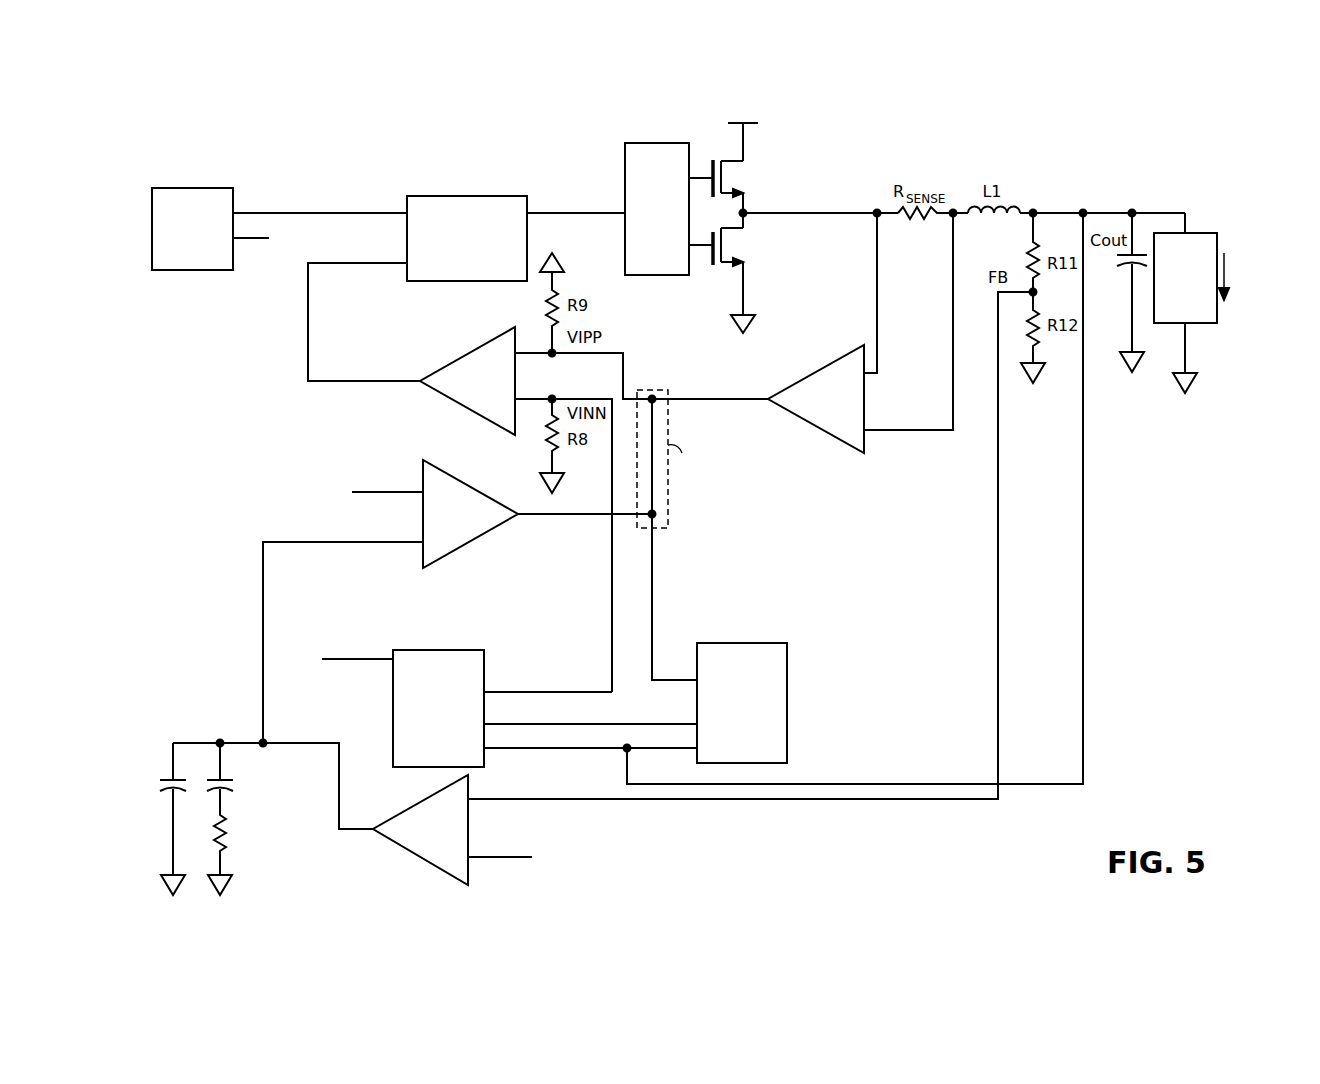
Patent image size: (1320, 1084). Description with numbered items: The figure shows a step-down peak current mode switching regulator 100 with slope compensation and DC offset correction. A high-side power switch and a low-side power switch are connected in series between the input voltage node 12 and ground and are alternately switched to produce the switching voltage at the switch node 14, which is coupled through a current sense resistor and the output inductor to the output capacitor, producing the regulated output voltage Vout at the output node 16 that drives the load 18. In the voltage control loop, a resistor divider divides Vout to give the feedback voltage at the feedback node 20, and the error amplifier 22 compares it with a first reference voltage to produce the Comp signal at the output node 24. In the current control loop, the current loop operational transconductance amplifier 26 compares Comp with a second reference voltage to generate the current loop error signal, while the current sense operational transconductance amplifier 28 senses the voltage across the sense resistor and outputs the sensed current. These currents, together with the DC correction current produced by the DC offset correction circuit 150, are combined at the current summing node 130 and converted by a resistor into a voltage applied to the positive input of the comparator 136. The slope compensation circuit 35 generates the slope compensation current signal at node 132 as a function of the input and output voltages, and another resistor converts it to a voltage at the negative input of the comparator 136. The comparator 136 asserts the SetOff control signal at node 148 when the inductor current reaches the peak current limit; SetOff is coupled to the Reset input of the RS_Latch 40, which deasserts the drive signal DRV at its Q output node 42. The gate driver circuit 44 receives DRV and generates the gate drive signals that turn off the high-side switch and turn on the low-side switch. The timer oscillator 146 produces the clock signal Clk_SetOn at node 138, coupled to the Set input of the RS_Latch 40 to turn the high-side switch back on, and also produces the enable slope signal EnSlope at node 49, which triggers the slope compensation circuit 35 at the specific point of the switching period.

The switching regulator 100 is at (1016, 152).
The timer oscillator 146 is at (190, 272).
The clock signal Clk_SetOn node 138 is at (285, 211).
The enable slope signal EnSlope node 49 is at (249, 240).
The RS_Latch 40 is at (469, 196).
The Q output terminal node (drive signal DRV) 42 is at (552, 212).
The gate driver circuit 44 is at (640, 142).
The input voltage node 12 is at (758, 123).
The switch node 14 is at (847, 213).
The output node 16 is at (1057, 211).
The load 18 is at (1206, 325).
The control signal SetOff node 148 is at (308, 328).
The comparator 136 is at (463, 360).
The current summing node 130 is at (652, 388).
The current sense operational transconductance amplifier 28 is at (858, 454).
The current loop operational transconductance amplifier 26 is at (484, 494).
The slope compensation signal node 132 is at (609, 603).
The error amplifier output signal Comp node 24 is at (262, 638).
The slope compensation circuit 35 is at (393, 696).
The DC offset correction circuit 150 is at (788, 704).
The error amplifier 22 is at (408, 851).
The feedback node 20 is at (893, 801).